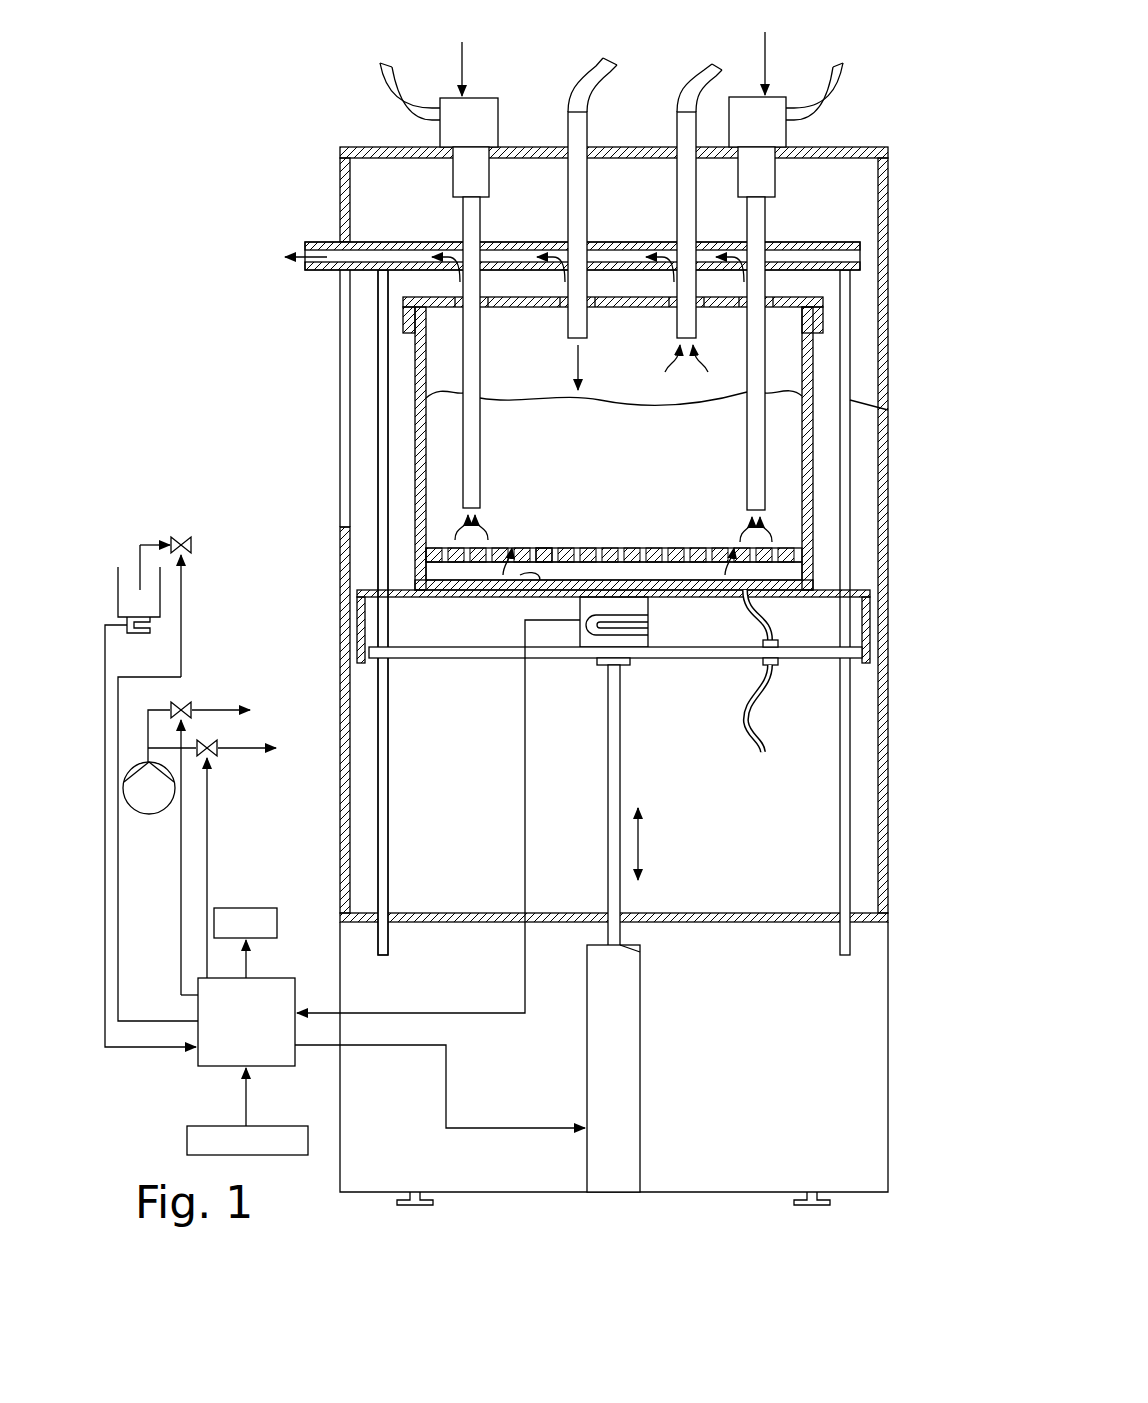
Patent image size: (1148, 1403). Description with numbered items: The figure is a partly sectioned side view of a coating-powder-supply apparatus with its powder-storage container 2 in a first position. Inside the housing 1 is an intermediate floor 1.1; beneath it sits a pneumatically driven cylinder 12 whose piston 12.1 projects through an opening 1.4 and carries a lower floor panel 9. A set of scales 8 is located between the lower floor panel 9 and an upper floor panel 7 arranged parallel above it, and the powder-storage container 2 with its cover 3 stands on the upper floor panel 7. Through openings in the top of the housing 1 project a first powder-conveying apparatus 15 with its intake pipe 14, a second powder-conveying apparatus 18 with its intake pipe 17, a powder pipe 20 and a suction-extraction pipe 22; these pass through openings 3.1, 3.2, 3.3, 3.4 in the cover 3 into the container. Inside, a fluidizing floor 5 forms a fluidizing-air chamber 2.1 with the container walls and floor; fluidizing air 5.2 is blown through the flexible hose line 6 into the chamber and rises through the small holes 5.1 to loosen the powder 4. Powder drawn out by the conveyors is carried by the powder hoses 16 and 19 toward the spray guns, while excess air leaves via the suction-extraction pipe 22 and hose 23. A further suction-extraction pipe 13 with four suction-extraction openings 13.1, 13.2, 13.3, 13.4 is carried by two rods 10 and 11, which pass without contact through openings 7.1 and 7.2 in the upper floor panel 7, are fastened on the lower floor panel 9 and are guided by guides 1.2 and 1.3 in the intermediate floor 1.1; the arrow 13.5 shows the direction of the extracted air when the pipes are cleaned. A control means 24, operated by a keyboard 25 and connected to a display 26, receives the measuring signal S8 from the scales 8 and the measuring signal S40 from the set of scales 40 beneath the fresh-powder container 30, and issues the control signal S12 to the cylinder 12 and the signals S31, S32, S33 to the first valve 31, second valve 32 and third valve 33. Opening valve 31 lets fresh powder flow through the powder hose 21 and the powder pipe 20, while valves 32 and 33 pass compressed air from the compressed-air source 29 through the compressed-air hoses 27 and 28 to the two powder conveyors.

The housing 1 is at (593, 659).
The intermediate floor 1.1 is at (614, 937).
The guide 1.2 is at (405, 616).
The guide 1.3 is at (828, 616).
The opening 1.4 is at (600, 807).
The powder-storage container 2 is at (554, 448).
The fluidizing-air chamber 2.1 is at (537, 579).
The cover 3 is at (559, 332).
The opening in the cover 3.1 is at (457, 324).
The opening in the cover 3.2 is at (562, 324).
The opening in the cover 3.3 is at (669, 324).
The opening in the cover 3.4 is at (739, 324).
The powder 4 is at (614, 384).
The fluidizing floor 5 is at (546, 540).
The holes 5.1 is at (567, 527).
The fluidizing air 5.2 is at (778, 790).
The hose line 6 is at (769, 671).
The upper floor panel 7 is at (570, 633).
The opening 7.1 is at (395, 630).
The opening 7.2 is at (837, 630).
The set of scales 8 is at (610, 622).
The lower floor panel 9 is at (615, 633).
The rod 10 is at (326, 612).
The rod 11 is at (895, 433).
The pneumatically driven cylinder 12 is at (644, 1068).
The piston 12.1 is at (672, 966).
The suction-extraction pipe 13 is at (569, 226).
The suction-extraction opening 13.1 is at (485, 240).
The suction-extraction opening 13.2 is at (588, 240).
The suction-extraction opening 13.3 is at (692, 240).
The suction-extraction opening 13.4 is at (767, 240).
The flow direction of the suction-extracted air 13.5 is at (289, 272).
The intake pipe 14 is at (487, 368).
The first powder-conveying apparatus 15 is at (485, 124).
The powder hose 16 is at (376, 28).
The intake pipe 17 is at (770, 369).
The second powder-conveying apparatus 18 is at (773, 120).
The powder hose 19 is at (848, 28).
The powder pipe 20 is at (554, 251).
The powder hose 21 is at (616, 61).
The suction-extraction pipe 22 is at (666, 242).
The hose 23 is at (716, 66).
The control means 24 is at (261, 999).
The keyboard 25 is at (218, 1111).
The display 26 is at (259, 923).
The compressed-air hose 27 is at (351, 372).
The compressed-air hose 28 is at (510, 388).
The compressed-air source 29 is at (149, 819).
The fresh-powder container 30 is at (134, 565).
The first valve 31 is at (158, 744).
The second valve 32 is at (199, 821).
The third valve 33 is at (212, 859).
The set of scales 40 is at (150, 832).
The measuring signal S8 is at (411, 831).
The control signal S12 is at (440, 1075).
The control signal S31 is at (146, 1012).
The control signal S32 is at (158, 915).
The control signal S33 is at (228, 835).
The measuring signal S40 is at (146, 1060).